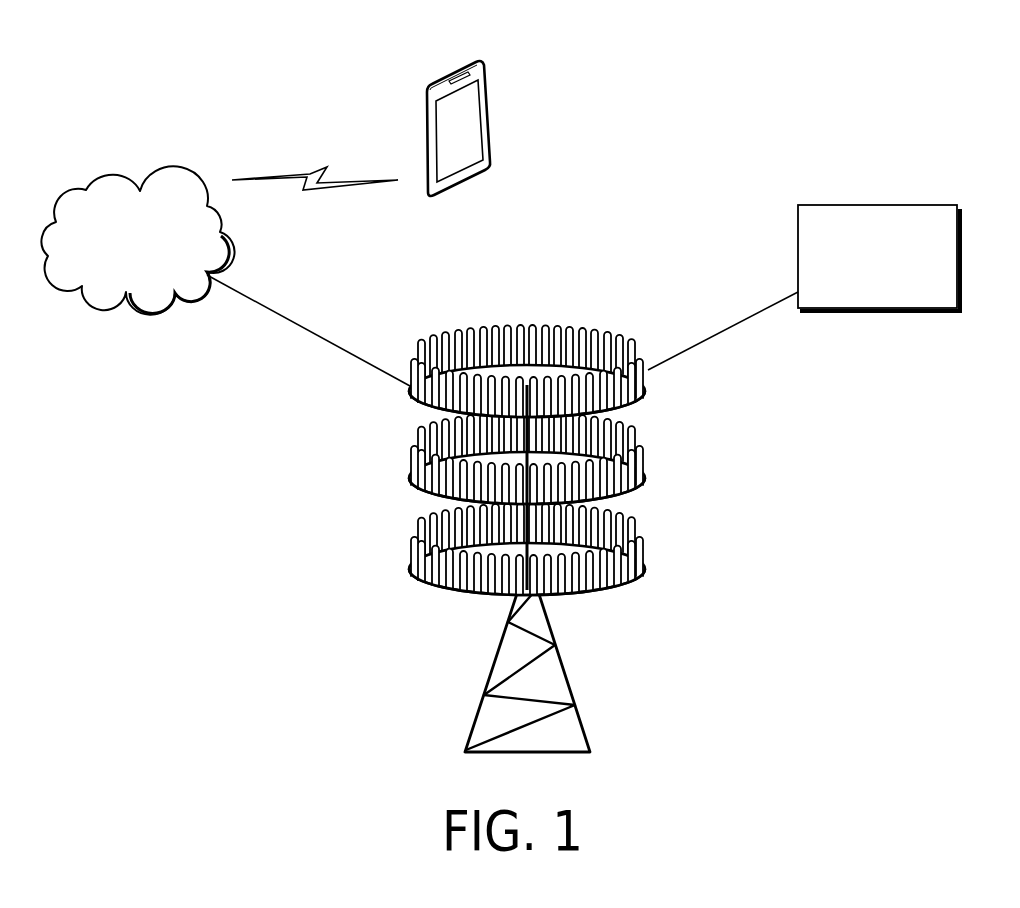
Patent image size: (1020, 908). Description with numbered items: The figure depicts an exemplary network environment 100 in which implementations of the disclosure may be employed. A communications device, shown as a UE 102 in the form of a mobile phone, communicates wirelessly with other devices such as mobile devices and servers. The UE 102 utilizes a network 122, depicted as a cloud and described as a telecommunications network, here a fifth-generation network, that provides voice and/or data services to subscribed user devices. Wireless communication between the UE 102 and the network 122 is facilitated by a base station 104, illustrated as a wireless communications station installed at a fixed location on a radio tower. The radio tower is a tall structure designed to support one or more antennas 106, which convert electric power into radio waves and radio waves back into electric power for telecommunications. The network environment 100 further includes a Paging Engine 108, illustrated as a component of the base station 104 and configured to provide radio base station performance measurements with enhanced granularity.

The network environment 100 is at (135, 53).
The UE 102 is at (457, 73).
The base station 104 is at (568, 675).
The antennas 106 is at (547, 330).
The Paging Engine 108 is at (853, 205).
The network 122 is at (113, 181).